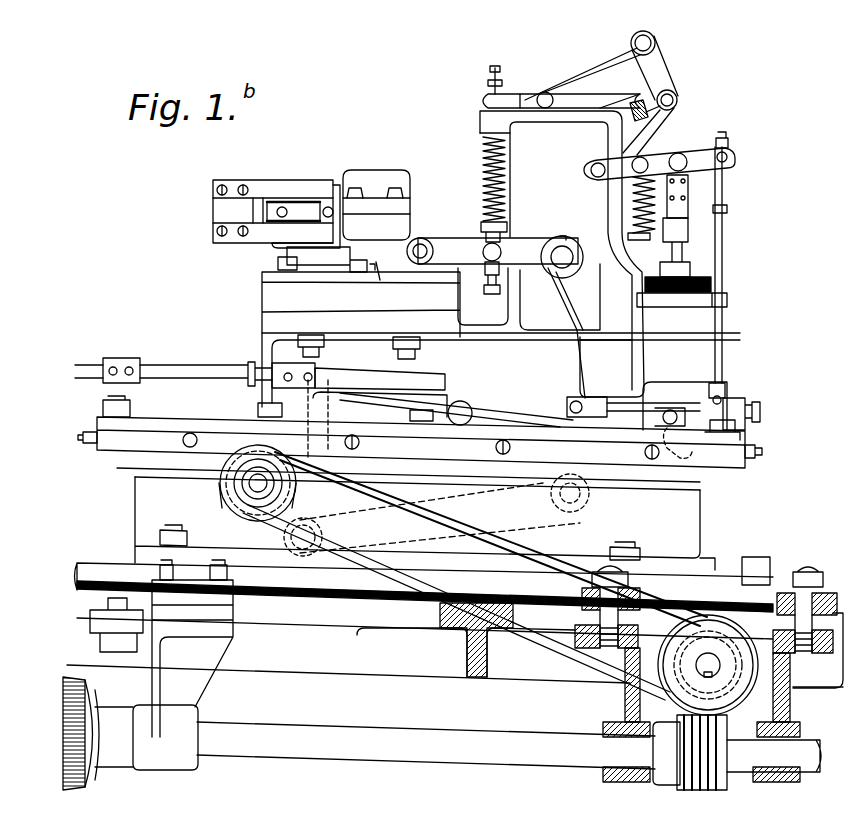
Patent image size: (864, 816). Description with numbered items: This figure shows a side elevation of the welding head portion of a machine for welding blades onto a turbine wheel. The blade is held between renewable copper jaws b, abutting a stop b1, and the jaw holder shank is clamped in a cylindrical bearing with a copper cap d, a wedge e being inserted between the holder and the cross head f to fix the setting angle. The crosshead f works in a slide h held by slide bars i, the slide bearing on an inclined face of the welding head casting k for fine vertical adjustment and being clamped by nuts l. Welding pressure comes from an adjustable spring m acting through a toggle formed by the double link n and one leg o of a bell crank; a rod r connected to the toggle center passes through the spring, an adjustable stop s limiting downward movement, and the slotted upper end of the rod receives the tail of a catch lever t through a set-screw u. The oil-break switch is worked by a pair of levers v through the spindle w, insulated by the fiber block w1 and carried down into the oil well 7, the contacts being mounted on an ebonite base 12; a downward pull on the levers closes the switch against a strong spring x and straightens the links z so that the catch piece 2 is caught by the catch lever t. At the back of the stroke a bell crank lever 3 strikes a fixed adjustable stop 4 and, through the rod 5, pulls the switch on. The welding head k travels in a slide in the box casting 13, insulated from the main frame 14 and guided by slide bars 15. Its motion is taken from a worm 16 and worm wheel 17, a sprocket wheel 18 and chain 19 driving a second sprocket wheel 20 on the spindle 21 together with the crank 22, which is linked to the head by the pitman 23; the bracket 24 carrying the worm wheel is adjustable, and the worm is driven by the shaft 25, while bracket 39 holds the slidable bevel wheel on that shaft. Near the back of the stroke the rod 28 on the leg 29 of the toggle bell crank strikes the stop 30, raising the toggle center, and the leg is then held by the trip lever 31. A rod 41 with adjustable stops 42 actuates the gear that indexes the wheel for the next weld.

The links z is at (663, 76).
The catch lever t is at (538, 95).
The rod r is at (482, 99).
The adjustable set-screw u is at (502, 70).
The catch piece 2 is at (638, 114).
The strong spring x is at (633, 206).
The adjustable spring m is at (482, 178).
The double link n is at (452, 243).
The leg of bell crank o is at (537, 246).
The adjustable stop s is at (484, 286).
The welding head casting k is at (492, 333).
The pair of levers v is at (700, 152).
The fiber block w1 is at (688, 188).
The spindle w is at (683, 252).
The insulating ebonite base 12 is at (718, 287).
The oil well 7 is at (697, 350).
The rod 5 is at (718, 371).
The copper jaws b is at (213, 212).
The stop b1 is at (255, 205).
The copper cap d is at (370, 178).
The wedge e is at (285, 250).
The slide bars i is at (371, 258).
The cross head f is at (384, 263).
The slide h is at (268, 300).
The nuts l is at (392, 348).
The adjustable stops 42 is at (132, 360).
The rod 41 is at (292, 363).
The trip lever 31 is at (520, 418).
The leg of toggle bell crank 29 is at (580, 388).
The rod 28 is at (666, 409).
The fixed adjustable stop 30 is at (744, 402).
The bell crank lever 3 is at (684, 442).
The slide bars 15 is at (226, 422).
The fixed adjustable stop 4 is at (753, 441).
The box casting 13 is at (690, 513).
The second sprocket wheel 20 is at (238, 488).
The spindle 21 is at (255, 486).
The crank 22 is at (308, 520).
The connecting rod or pitman 23 is at (558, 509).
The sprocket wheel 18 is at (672, 697).
The worm wheel 17 is at (710, 667).
The main frame 14 is at (377, 617).
The chain 19 is at (420, 588).
The bracket 39 is at (198, 693).
The shaft 25 is at (430, 750).
The worm 16 is at (722, 780).
The bracket 24 is at (622, 708).